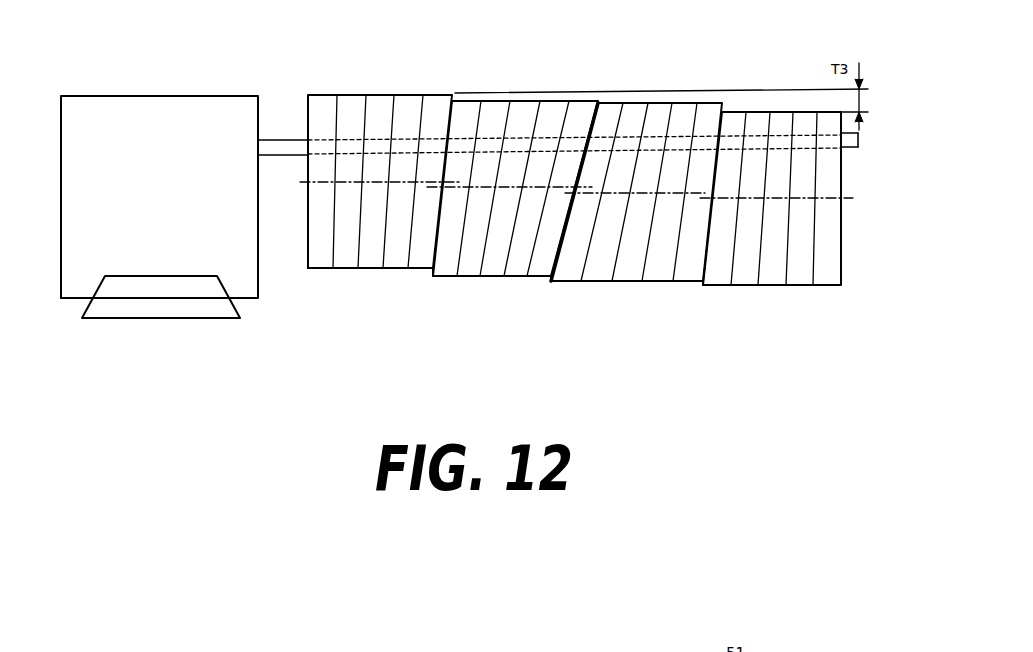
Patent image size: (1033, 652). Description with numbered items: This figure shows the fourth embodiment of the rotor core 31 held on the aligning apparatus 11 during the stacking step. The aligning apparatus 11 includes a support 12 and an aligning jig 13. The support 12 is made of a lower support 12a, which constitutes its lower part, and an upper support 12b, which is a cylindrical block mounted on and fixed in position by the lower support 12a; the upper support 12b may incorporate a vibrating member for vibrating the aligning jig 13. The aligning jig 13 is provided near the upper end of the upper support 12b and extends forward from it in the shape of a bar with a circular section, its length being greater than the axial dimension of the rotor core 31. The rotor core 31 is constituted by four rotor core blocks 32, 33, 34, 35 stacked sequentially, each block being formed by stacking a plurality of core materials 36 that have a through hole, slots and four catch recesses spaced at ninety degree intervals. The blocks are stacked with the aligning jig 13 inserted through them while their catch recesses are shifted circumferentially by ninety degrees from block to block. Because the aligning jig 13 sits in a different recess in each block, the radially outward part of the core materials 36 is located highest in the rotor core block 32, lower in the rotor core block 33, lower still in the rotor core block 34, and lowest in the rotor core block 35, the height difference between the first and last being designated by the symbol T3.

The aligning apparatus 11 is at (127, 92).
The support 12 is at (145, 343).
The lower support 12a is at (88, 306).
The upper support 12b is at (60, 274).
The aligning jig 13 is at (859, 147).
The rotor core 31 is at (585, 221).
The rotor core block 32 is at (428, 280).
The rotor core block 33 is at (553, 282).
The rotor core block 34 is at (700, 286).
The rotor core block 35 is at (855, 285).
The core material 36 is at (301, 251).